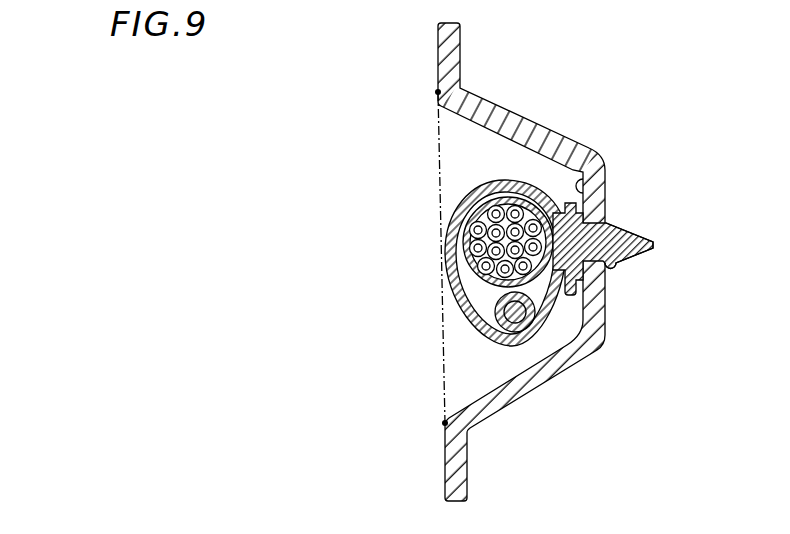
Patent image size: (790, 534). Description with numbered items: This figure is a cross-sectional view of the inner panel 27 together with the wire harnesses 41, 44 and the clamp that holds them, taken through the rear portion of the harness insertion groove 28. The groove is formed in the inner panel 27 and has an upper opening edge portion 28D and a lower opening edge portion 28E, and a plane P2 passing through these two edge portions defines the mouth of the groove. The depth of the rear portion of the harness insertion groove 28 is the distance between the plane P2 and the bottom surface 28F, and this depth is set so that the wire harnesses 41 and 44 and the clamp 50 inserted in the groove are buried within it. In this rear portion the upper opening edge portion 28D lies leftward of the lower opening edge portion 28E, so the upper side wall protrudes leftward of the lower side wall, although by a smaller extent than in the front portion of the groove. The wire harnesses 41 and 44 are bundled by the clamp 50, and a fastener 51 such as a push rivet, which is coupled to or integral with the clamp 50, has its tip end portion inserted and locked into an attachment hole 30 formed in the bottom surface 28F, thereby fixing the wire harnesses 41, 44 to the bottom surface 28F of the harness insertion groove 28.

The inner panel 27 is at (446, 56).
The harness insertion groove 28 is at (540, 350).
The upper opening edge portion 28D is at (438, 92).
The lower opening edge portion 28E is at (445, 423).
The bottom surface 28F is at (606, 173).
The plane P2 is at (438, 137).
The attachment hole 30 is at (612, 269).
The wire harness 41 is at (464, 243).
The wire harness 44 is at (497, 307).
The clamp 50 is at (452, 276).
The fastener 51 is at (657, 243).